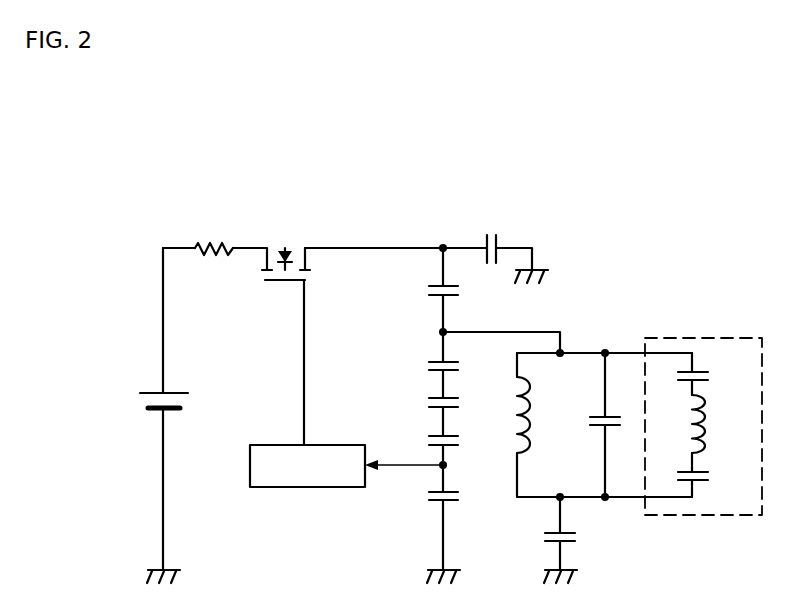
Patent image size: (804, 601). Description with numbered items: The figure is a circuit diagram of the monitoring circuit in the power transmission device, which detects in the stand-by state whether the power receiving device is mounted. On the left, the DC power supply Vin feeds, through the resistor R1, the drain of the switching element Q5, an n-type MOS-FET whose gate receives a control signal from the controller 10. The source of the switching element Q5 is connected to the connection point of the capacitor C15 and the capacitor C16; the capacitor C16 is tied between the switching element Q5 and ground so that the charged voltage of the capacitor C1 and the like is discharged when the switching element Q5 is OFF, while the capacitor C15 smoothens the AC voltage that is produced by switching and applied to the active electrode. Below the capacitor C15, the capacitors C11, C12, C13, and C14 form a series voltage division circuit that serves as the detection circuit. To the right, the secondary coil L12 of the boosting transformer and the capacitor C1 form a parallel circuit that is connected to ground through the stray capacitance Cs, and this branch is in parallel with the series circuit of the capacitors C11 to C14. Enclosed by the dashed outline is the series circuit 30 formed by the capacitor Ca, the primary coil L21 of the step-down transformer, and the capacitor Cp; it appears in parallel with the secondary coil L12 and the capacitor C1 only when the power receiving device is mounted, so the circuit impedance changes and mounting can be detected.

The resistor R1 is at (214, 237).
The switching element Q5 is at (284, 277).
The DC power supply Vin is at (159, 387).
The capacitor C15 is at (423, 292).
The capacitor C16 is at (513, 243).
The capacitor C11 is at (423, 361).
The capacitor C12 is at (423, 398).
The capacitor C13 is at (423, 436).
The capacitor C14 is at (423, 492).
The controller 10 is at (275, 487).
The secondary coil L12 is at (541, 415).
The capacitor C1 is at (596, 433).
The capacitor Ca is at (708, 373).
The primary coil L21 is at (715, 424).
The capacitor Cp is at (708, 472).
The stray capacitance Cs is at (566, 527).
The series circuit 30 is at (748, 333).